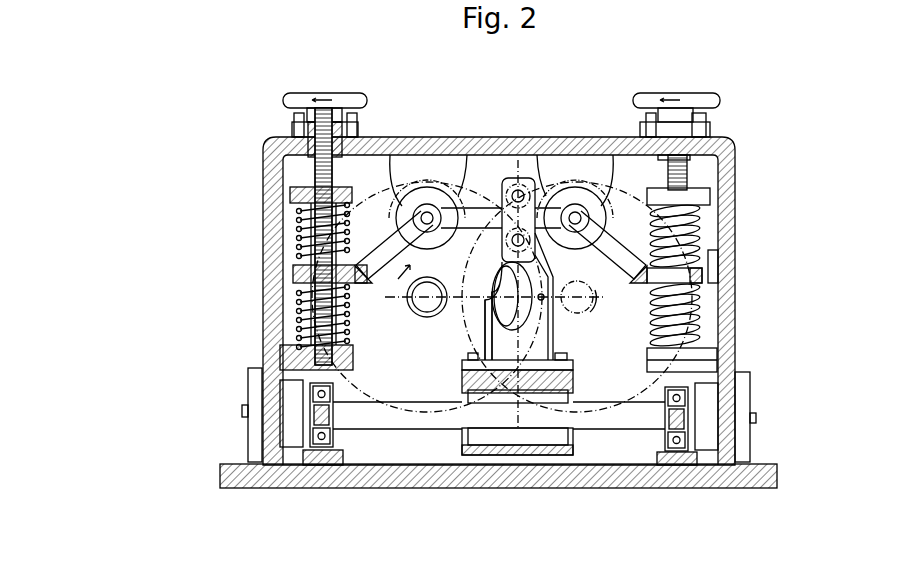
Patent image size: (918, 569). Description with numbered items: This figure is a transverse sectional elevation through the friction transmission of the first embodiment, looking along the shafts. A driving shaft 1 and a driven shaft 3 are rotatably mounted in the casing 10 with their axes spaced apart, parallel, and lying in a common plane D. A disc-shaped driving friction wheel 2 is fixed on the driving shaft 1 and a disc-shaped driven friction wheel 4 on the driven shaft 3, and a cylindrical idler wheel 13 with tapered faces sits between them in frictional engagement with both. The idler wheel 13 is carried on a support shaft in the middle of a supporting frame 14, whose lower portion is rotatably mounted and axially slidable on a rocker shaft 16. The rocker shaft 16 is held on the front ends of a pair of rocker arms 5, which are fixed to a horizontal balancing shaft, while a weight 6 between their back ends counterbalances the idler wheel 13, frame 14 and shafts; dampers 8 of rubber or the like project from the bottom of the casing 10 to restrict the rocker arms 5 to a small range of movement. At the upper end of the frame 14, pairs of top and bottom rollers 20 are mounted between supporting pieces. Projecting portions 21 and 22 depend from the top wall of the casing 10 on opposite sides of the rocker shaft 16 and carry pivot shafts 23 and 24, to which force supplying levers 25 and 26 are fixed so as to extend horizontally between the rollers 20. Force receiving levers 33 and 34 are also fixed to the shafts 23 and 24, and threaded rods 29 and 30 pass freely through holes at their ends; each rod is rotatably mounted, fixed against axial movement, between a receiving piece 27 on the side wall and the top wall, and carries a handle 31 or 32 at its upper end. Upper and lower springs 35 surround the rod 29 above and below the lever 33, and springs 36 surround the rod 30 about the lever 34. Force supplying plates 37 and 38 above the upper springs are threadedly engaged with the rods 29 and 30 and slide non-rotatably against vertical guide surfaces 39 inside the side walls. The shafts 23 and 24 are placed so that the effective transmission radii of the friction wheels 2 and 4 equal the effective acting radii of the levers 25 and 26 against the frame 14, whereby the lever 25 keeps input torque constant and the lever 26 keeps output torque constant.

The driving shaft 1 is at (592, 300).
The driving friction wheel 2 is at (692, 390).
The driven shaft 3 is at (420, 300).
The driven friction wheel 4 is at (345, 373).
The rocker arms 5 is at (321, 442).
The weight 6 is at (600, 440).
The dampers 8 is at (334, 458).
The casing 10 is at (286, 140).
The idler wheel 13 is at (520, 306).
The supporting frame 14 is at (490, 336).
The rocker shaft 16 is at (412, 420).
The bottom rollers 20 is at (288, 350).
The projecting portion 21 is at (581, 160).
The projecting portion 22 is at (436, 160).
The pivot shaft 23 is at (578, 214).
The pivot shaft 24 is at (425, 212).
The force supplying lever 25 is at (557, 214).
The force supplying lever 26 is at (476, 212).
The receiving piece 27 is at (702, 366).
The threaded rod 29 is at (718, 180).
The threaded rod 30 is at (316, 175).
The handle 31 is at (682, 97).
The handle 32 is at (341, 96).
The force receiving lever 33 is at (690, 254).
The force receiving lever 34 is at (305, 252).
The springs 35 is at (700, 208).
The springs 36 is at (300, 226).
The force supplying plate 37 is at (694, 198).
The force supplying plate 38 is at (292, 193).
The vertical guide surface 39 is at (352, 262).
The common plane D is at (577, 297).